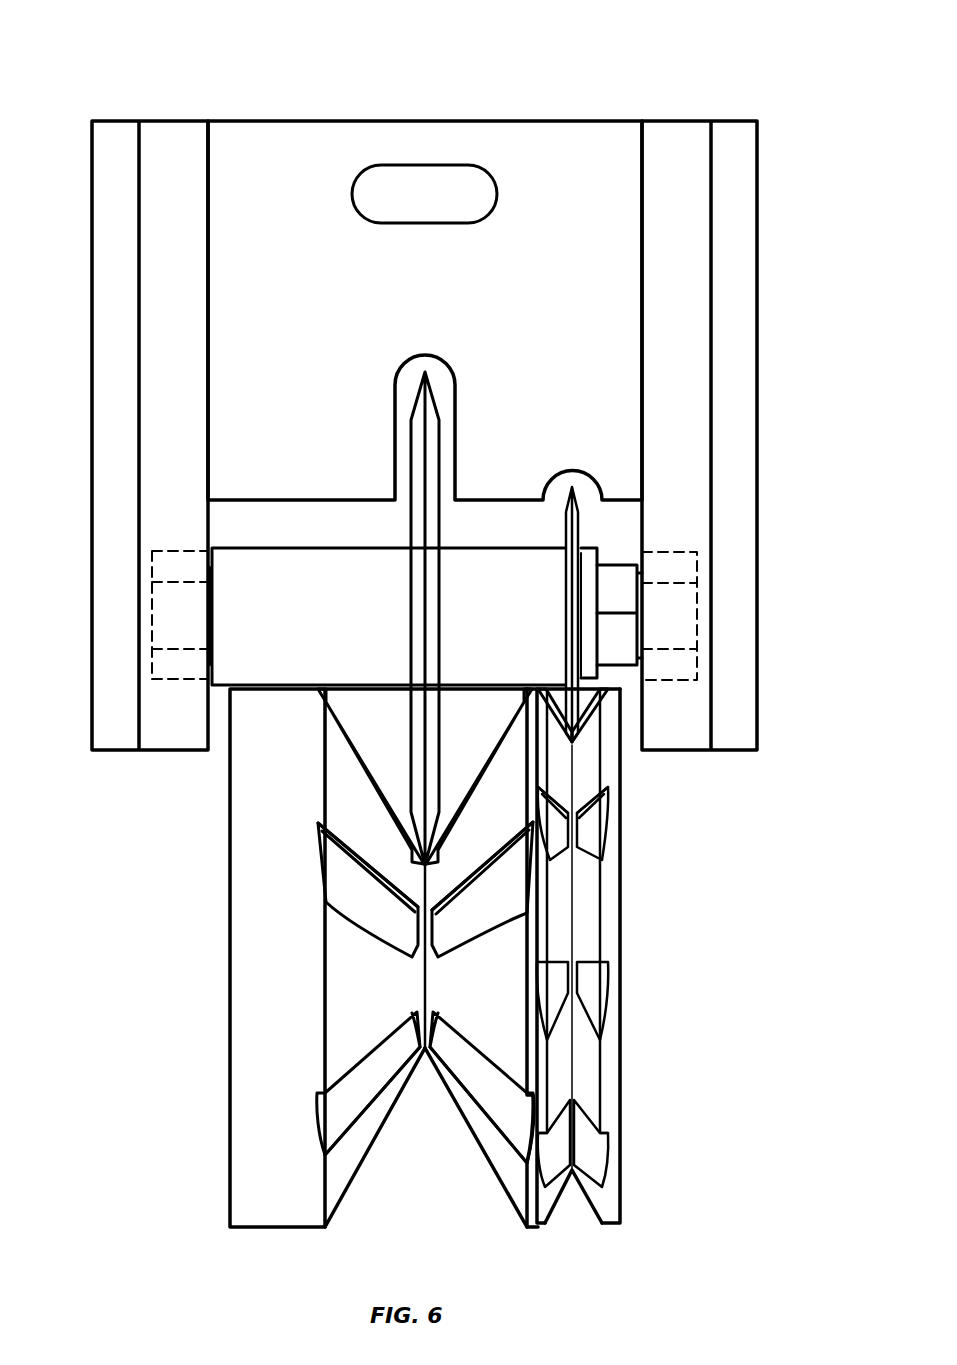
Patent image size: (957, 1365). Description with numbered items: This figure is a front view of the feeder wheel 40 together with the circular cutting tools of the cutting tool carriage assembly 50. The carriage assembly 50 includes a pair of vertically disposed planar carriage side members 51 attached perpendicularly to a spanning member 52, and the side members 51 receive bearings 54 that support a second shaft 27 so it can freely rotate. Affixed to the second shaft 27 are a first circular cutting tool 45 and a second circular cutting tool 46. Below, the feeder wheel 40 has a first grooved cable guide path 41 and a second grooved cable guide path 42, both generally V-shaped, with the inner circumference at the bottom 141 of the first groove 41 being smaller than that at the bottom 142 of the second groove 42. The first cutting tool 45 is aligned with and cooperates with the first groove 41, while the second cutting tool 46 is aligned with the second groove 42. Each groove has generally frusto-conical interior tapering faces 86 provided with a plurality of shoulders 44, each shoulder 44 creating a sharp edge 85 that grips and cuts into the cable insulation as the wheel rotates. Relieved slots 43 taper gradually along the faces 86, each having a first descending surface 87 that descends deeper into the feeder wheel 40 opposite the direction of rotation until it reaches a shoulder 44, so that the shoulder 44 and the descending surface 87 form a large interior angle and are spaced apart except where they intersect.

The cutting tool carriage assembly 50 is at (785, 66).
The spanning member 52 is at (528, 135).
The carriage side members 51 is at (152, 318).
The second shaft 27 is at (342, 588).
The bearings 54 is at (150, 565).
The first circular cutting tool 45 is at (428, 415).
The second circular cutting tool 46 is at (572, 528).
The feeder wheel 40 is at (253, 1043).
The first grooved cable guide path 41 is at (408, 1203).
The second grooved cable guide path 42 is at (590, 1218).
The interior tapering faces 86 is at (340, 1005).
The shoulders 44 is at (318, 826).
The sharp edge 85 is at (335, 832).
The relieved slots 43 is at (325, 885).
The first descending surface 87 is at (337, 1113).
The bottom of the first groove 141 is at (427, 1050).
The bottom of the second groove 142 is at (572, 1172).